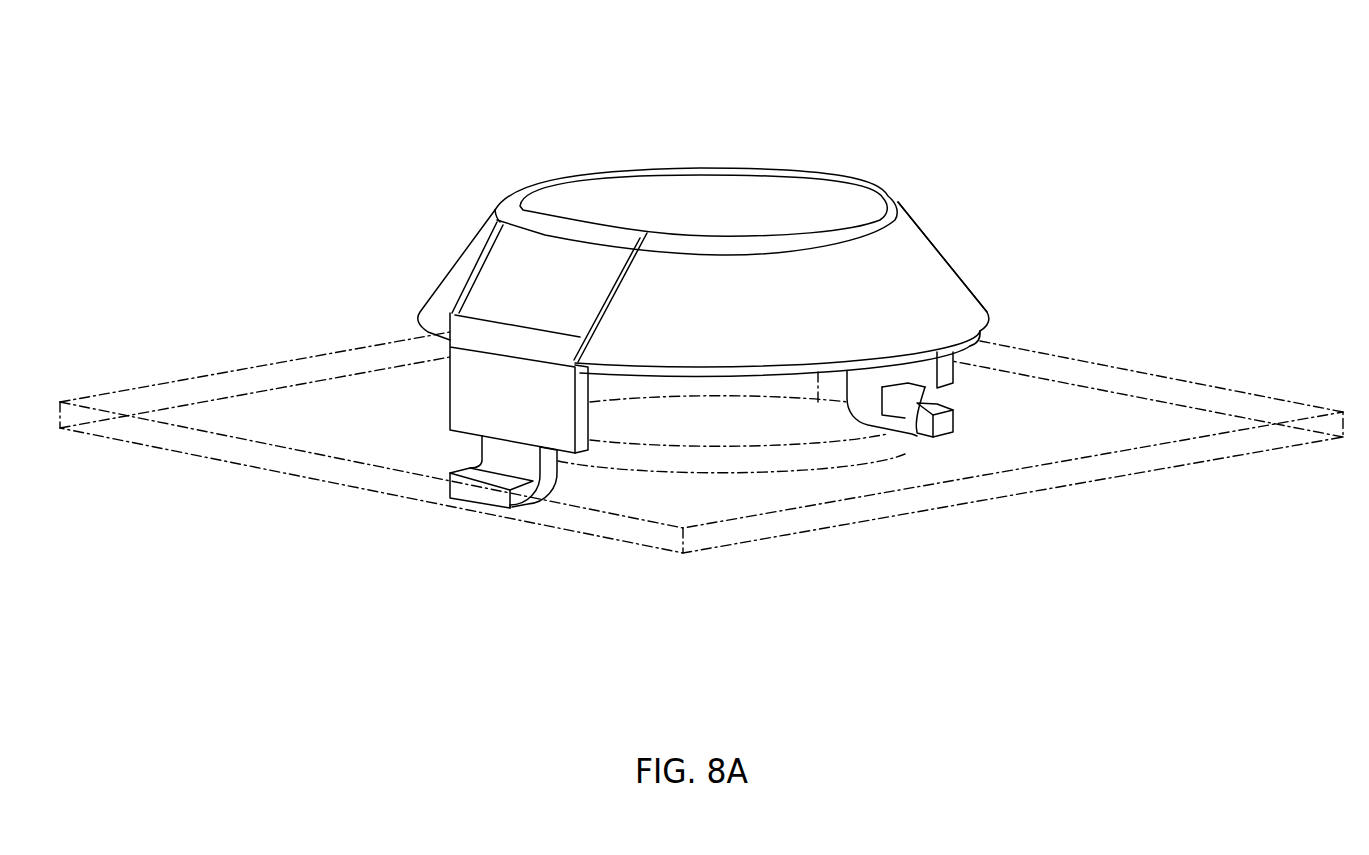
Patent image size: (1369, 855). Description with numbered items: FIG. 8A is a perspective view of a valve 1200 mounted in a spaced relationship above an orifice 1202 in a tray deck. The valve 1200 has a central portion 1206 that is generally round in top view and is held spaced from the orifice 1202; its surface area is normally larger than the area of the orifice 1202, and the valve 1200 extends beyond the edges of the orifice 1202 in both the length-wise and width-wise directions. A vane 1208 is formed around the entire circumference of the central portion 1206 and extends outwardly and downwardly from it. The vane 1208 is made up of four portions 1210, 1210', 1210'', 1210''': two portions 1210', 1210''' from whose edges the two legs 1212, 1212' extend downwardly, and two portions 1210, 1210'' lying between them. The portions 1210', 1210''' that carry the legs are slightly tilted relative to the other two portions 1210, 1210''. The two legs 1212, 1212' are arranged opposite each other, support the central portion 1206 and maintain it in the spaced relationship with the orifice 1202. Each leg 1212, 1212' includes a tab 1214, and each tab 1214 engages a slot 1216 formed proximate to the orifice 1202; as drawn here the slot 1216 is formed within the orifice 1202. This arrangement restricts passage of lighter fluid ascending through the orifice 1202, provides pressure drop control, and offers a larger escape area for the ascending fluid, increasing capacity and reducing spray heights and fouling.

The valve 1200 is at (701, 357).
The orifice 1202 is at (728, 425).
The central portion 1206 is at (669, 186).
The vane 1208 is at (868, 279).
The vane portion 1210 is at (849, 284).
The vane portion 1210' is at (549, 200).
The vane portion 1210'' is at (387, 258).
The vane portion 1210''' is at (696, 168).
The leg 1212 is at (414, 366).
The leg 1212' is at (1018, 452).
The tab 1214 is at (510, 455).
The slot 1216 is at (572, 463).